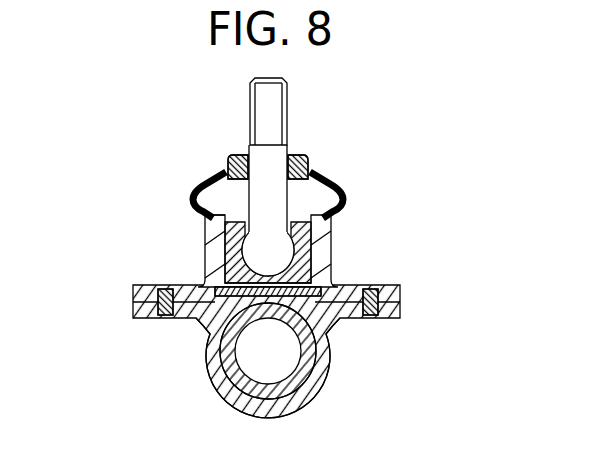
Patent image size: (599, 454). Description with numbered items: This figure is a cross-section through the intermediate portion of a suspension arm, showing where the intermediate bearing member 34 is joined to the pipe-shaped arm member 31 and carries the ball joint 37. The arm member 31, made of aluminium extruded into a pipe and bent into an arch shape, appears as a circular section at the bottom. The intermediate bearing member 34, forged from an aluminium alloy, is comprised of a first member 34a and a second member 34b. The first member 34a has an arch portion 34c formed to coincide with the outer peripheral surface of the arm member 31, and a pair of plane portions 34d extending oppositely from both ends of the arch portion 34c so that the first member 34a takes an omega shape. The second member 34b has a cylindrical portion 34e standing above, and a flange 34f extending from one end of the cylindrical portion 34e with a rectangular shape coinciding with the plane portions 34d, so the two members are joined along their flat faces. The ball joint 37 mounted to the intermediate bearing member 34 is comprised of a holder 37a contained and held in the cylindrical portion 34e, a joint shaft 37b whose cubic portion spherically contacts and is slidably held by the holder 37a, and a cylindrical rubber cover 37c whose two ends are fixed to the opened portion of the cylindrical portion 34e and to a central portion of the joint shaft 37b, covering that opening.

The arm member 31 is at (310, 352).
The intermediate bearing member 34 is at (404, 293).
The first member 34a is at (201, 333).
The second member 34b is at (199, 276).
The arch portion 34c is at (222, 366).
The plane portions 34d is at (135, 323).
The cylindrical portion 34e is at (215, 250).
The flange 34f is at (188, 267).
The ball joint 37 is at (221, 158).
The holder 37a is at (307, 262).
The joint shaft 37b is at (268, 110).
The cylindrical rubber cover 37c is at (330, 180).